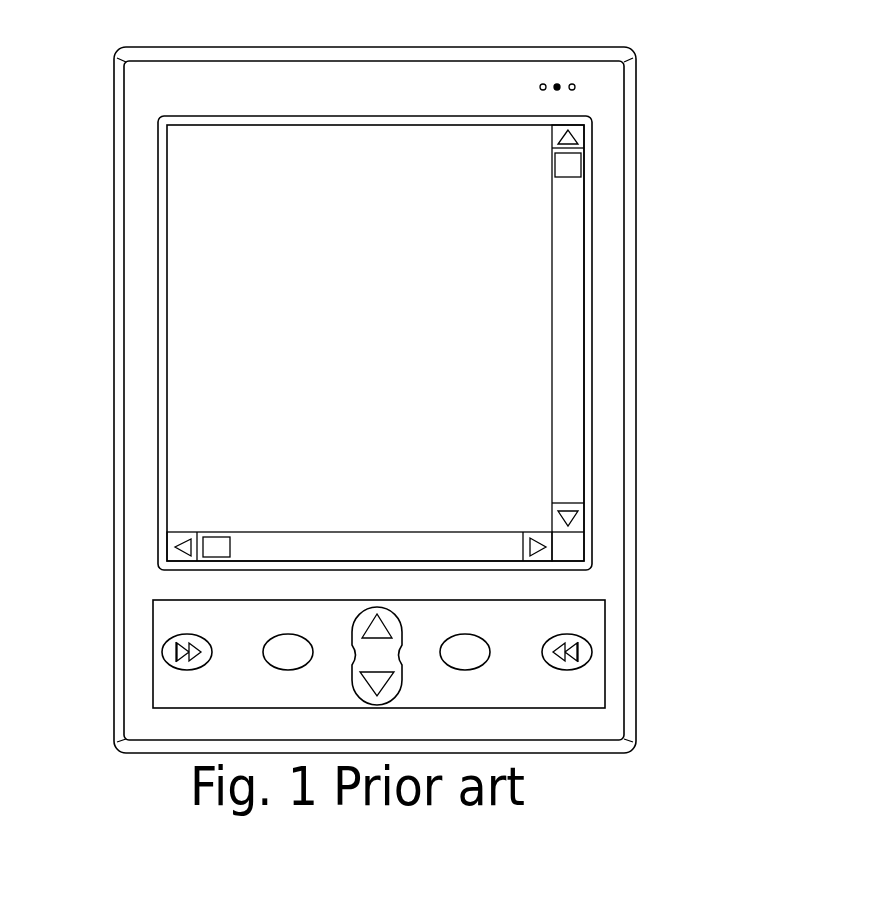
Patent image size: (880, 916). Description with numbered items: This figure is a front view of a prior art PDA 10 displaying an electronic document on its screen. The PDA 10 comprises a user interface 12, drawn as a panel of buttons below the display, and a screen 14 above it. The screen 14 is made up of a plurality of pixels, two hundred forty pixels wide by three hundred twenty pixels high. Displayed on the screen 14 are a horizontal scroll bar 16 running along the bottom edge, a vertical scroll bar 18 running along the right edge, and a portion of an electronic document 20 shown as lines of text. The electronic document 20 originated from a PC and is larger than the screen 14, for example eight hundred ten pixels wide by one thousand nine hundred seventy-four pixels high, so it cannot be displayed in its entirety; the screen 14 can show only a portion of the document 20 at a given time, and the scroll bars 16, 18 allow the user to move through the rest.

The PDA 10 is at (655, 136).
The user interface 12 is at (567, 695).
The screen 14 is at (160, 232).
The horizontal scroll bar 16 is at (265, 548).
The vertical scroll bar 18 is at (563, 245).
The electronic document 20 is at (515, 452).